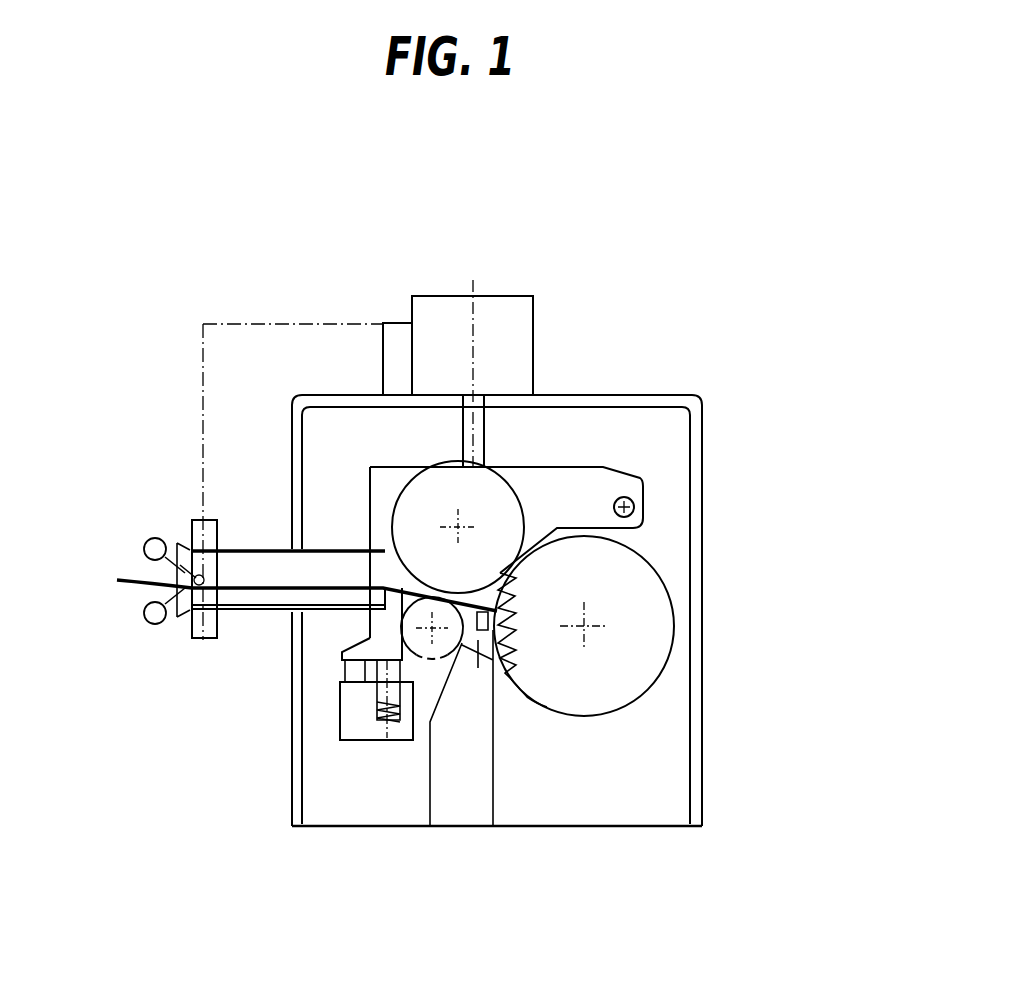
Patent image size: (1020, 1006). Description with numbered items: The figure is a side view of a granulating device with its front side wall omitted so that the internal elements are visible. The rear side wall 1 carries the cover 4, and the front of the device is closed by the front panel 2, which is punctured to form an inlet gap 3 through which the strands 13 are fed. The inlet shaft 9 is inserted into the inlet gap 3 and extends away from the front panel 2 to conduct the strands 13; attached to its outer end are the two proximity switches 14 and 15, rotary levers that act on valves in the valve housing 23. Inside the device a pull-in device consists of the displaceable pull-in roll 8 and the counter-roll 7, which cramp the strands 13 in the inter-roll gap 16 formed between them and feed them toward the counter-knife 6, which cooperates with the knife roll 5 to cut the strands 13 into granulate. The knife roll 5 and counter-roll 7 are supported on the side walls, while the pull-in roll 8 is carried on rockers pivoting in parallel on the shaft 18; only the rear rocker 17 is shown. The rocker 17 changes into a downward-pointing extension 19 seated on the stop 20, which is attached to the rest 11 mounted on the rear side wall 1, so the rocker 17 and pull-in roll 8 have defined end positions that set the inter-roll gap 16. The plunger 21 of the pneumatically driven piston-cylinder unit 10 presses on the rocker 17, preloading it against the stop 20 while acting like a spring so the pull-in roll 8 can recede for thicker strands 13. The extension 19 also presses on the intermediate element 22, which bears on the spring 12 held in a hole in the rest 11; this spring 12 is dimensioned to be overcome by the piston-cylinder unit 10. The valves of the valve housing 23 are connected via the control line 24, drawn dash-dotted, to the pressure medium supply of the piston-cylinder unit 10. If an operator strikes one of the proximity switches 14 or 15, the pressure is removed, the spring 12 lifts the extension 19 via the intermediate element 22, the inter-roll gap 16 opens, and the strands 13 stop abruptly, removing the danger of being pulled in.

The rear side wall 1 is at (660, 773).
The front panel 2 is at (297, 642).
The inlet gap 3 is at (317, 580).
The cover 4 is at (667, 393).
The knife roll 5 is at (512, 640).
The counter-knife 6 is at (482, 668).
The counter-roll 7 is at (420, 587).
The displaceable pull-in roll 8 is at (503, 513).
The inlet shaft 9 is at (250, 568).
The piston-cylinder unit 10 is at (447, 347).
The rest 11 is at (353, 675).
The spring 12 is at (393, 690).
The strands 13 is at (132, 587).
The proximity switch 14 is at (147, 542).
The proximity switch 15 is at (155, 625).
The inter-roll gap 16 is at (387, 545).
The rocker 17 is at (572, 500).
The shaft 18 is at (637, 505).
The extension 19 is at (343, 658).
The stop 20 is at (342, 700).
The plunger 21 is at (478, 443).
The intermediate element 22 is at (413, 685).
The valve housing 23 is at (205, 632).
The control line 24 is at (200, 450).